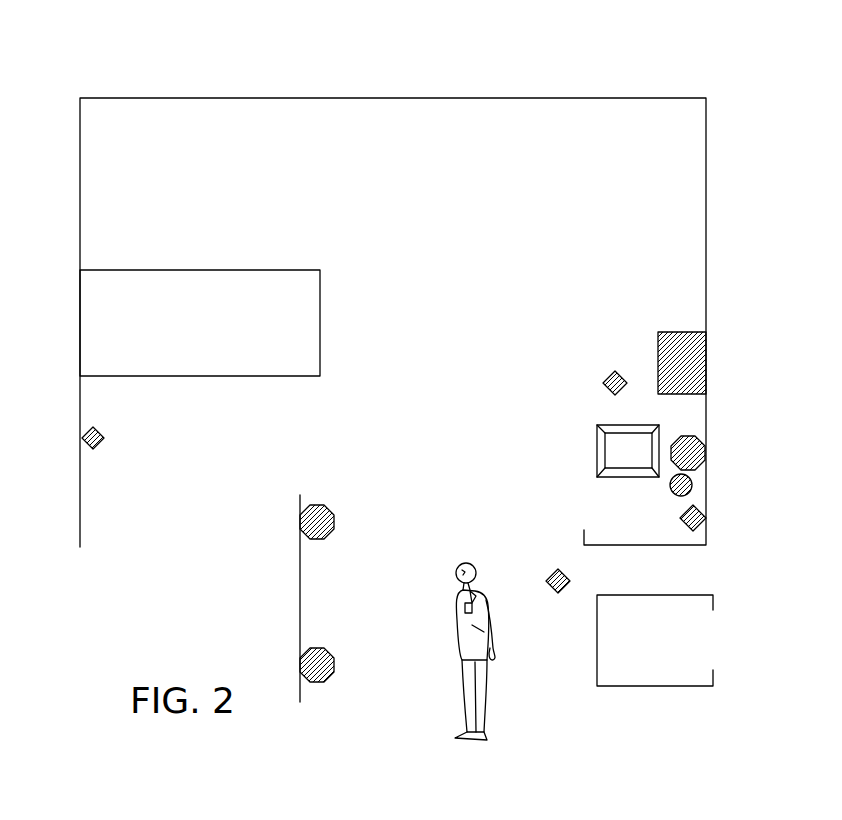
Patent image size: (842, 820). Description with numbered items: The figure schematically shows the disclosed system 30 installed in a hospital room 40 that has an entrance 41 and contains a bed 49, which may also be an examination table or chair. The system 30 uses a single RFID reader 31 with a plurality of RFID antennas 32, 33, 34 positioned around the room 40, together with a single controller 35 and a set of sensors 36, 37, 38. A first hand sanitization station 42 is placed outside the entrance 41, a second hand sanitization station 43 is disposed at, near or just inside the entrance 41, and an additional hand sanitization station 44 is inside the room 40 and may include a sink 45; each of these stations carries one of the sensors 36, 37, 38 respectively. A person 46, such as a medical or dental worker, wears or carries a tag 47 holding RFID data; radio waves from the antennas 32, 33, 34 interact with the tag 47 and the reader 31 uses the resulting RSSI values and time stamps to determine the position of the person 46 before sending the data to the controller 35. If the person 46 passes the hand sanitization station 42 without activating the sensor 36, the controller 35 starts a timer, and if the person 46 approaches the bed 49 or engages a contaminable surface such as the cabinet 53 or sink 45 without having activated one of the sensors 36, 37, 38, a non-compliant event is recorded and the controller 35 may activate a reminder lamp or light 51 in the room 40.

The system 30 is at (142, 595).
The room 40 is at (255, 98).
The bed 49 is at (187, 270).
The controller 35 is at (676, 332).
The RFID antenna 33 is at (612, 376).
The RFID antenna 34 is at (103, 434).
The RFID antenna 32 is at (555, 575).
The RFID reader 31 is at (703, 508).
The sink 45 is at (597, 440).
The sensor 38 is at (692, 437).
The sensor 37 is at (334, 510).
The sensor 36 is at (331, 652).
The reminder lamp or light 51 is at (673, 492).
The cabinet 53 is at (597, 640).
The entrance 41 is at (422, 502).
The hand sanitization station 43 is at (329, 485).
The hand sanitization station 42 is at (339, 629).
The hand sanitization station 44 is at (718, 476).
The person 46 is at (436, 664).
The tag 47 is at (474, 607).